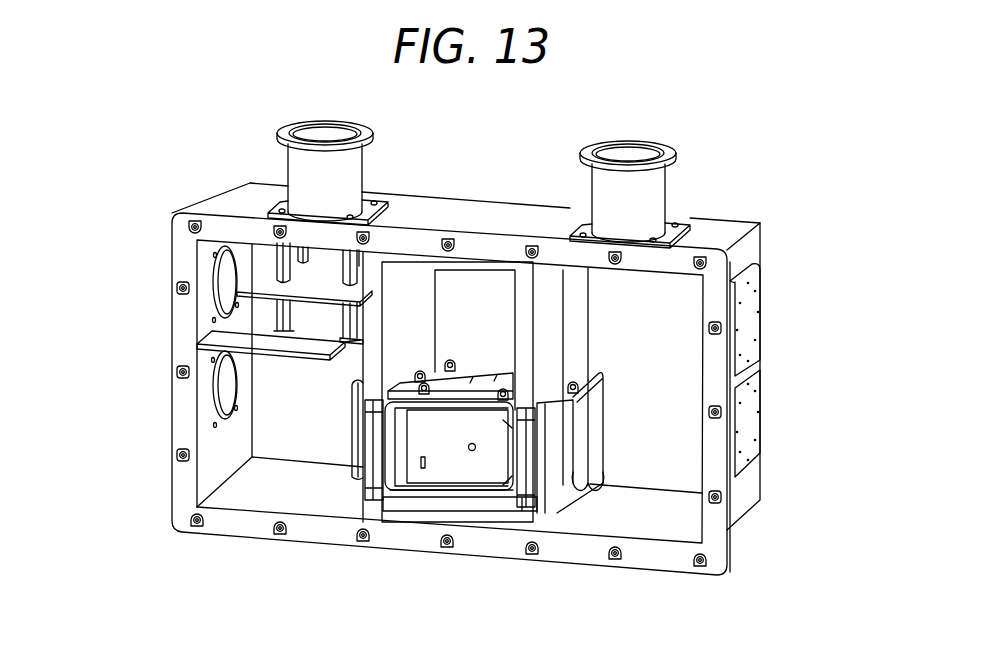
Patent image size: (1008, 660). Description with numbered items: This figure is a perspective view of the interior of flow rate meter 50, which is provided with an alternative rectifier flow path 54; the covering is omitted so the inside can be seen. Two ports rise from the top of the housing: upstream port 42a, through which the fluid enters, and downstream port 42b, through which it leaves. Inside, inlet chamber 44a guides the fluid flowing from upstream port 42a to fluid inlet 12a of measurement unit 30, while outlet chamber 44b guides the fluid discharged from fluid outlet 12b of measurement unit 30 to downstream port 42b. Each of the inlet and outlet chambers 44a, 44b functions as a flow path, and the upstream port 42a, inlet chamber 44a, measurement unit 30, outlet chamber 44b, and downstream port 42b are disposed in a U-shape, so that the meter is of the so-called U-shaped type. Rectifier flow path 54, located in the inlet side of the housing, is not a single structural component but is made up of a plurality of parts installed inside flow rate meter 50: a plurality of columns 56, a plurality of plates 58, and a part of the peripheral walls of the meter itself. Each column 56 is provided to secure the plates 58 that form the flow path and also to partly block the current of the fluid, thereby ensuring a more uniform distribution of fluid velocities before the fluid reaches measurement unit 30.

The flow rate meter 50 is at (757, 188).
The upstream port 42a is at (325, 120).
The downstream port 42b is at (633, 142).
The inlet chamber 44a is at (278, 418).
The outlet chamber 44b is at (653, 462).
The rectifier flow path 54 is at (240, 328).
The column 56 is at (278, 262).
The plates 58 is at (252, 278).
The fluid inlet 12a is at (345, 446).
The fluid outlet 12b is at (597, 412).
The measurement unit 30 is at (478, 498).